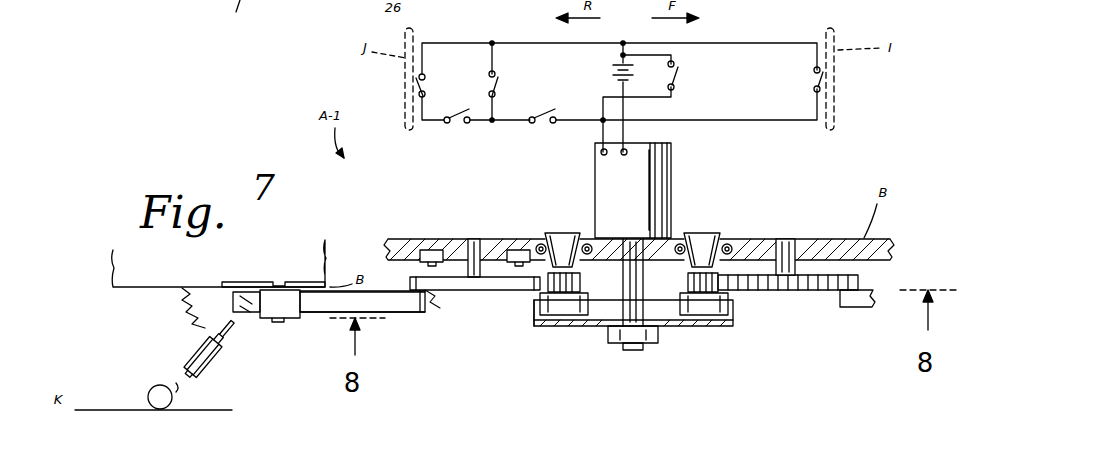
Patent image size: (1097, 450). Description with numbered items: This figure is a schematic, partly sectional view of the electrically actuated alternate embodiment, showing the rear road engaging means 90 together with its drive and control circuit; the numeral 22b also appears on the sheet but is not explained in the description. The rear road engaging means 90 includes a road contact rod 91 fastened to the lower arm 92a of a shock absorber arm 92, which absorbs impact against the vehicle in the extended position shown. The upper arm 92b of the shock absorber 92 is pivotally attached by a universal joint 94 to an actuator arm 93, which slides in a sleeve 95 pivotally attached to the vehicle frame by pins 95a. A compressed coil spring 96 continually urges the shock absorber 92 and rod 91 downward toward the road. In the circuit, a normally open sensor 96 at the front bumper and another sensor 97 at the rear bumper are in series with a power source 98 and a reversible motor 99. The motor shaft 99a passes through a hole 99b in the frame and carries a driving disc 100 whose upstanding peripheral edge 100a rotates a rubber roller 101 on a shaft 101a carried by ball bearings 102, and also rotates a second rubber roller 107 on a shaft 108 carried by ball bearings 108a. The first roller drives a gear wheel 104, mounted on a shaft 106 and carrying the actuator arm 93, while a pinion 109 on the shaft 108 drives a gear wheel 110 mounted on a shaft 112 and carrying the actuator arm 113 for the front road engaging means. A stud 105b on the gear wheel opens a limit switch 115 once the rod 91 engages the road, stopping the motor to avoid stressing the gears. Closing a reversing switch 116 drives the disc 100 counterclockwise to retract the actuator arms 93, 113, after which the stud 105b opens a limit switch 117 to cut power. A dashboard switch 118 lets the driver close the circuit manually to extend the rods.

The conveyor section 22b is at (238, 21).
The rear road engaging means 90 is at (230, 352).
The road contact member or rod 91 is at (148, 392).
The shock absorber arm 92 is at (194, 372).
The lower arm 92a is at (172, 386).
The upper arm 92b is at (240, 330).
The actuator arm 93 is at (405, 314).
The universal joint 94 is at (256, 290).
The sleeve 95 is at (300, 320).
The pins 95a is at (282, 282).
The compressed coil spring / electric sensor 96 is at (814, 88).
The electrical sensor 97 is at (418, 92).
The power source 98 is at (612, 70).
The reversible motor 99 is at (655, 168).
The electric motor shaft 99a is at (600, 332).
The hole 99b is at (594, 240).
The driving disc 100 is at (540, 328).
The upstanding peripheral edge 100a is at (532, 306).
The rubber roller 101 is at (572, 318).
The shaft 101a is at (582, 272).
The ball bearings 102 is at (534, 238).
The gear wheel 104 is at (463, 292).
The stud 105b is at (438, 296).
The shaft 106 is at (474, 238).
The rubber roller 107 is at (707, 330).
The shaft 108 is at (686, 274).
The ball bearings 108a is at (736, 238).
The pinion 109 is at (681, 334).
The gear wheel 110 is at (780, 292).
The shaft 112 is at (783, 238).
The actuator arm 113 is at (866, 309).
The limit switch 115 is at (453, 124).
The reversing switch 116 is at (676, 78).
The limit switch 117 is at (537, 125).
The switch 118 is at (490, 85).